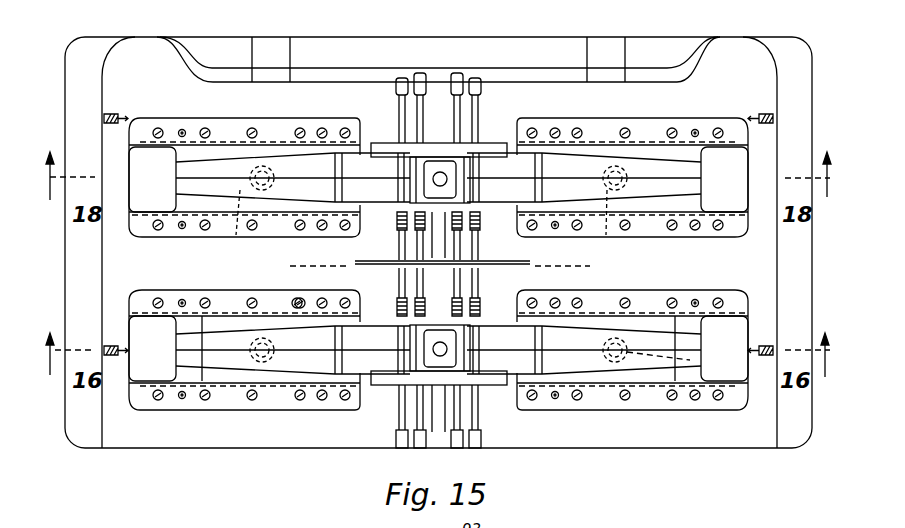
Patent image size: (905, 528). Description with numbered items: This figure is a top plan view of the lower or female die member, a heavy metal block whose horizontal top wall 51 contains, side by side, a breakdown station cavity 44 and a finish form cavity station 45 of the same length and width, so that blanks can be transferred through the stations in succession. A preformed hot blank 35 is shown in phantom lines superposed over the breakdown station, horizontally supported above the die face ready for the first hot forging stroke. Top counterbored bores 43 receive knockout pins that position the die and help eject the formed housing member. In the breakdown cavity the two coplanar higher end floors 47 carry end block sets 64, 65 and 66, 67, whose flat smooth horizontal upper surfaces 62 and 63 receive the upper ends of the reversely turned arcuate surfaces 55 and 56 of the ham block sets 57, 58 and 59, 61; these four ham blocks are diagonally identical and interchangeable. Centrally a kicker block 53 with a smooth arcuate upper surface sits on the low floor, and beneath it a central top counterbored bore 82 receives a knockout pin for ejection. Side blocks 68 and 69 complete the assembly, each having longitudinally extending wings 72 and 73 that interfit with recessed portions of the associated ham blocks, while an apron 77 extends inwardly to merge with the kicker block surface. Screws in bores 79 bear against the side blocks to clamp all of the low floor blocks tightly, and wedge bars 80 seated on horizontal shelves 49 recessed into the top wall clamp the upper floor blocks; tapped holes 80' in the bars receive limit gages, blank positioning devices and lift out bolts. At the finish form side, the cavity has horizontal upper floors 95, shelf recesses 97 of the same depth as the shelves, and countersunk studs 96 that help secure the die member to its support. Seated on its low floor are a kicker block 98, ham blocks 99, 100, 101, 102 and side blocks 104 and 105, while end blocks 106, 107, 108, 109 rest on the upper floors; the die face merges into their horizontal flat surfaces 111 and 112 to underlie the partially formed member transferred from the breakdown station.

The hot blank 35 is at (372, 313).
The top counterbored bores 43 is at (687, 360).
The breakdown station cavity 44 is at (752, 328).
The finish form cavity station 45 is at (752, 175).
The upper end floors 47 is at (137, 335).
The horizontal shelves 49 is at (288, 300).
The horizontal top wall 51 is at (745, 448).
The kicker block 53 is at (467, 336).
The arcuate surface of ham blocks 55 is at (361, 380).
The arcuate surface of ham blocks 56 is at (500, 378).
The ham block 57 is at (365, 300).
The ham block 58 is at (363, 382).
The ham block 59 is at (560, 302).
The ham block 61 is at (513, 384).
The upper surface of end blocks 62 is at (235, 338).
The upper surface of end blocks 63 is at (622, 300).
The end block 64 is at (228, 360).
The end block 65 is at (243, 377).
The end block 66 is at (657, 325).
The end block 67 is at (638, 378).
The side block 68 is at (425, 383).
The side block 69 is at (415, 320).
The wing 72 is at (384, 316).
The wing 73 is at (488, 320).
The apron 77 is at (470, 282).
The bores 79 is at (400, 216).
The wedge bars 80 is at (485, 262).
The tapped holes 80' is at (449, 263).
The central top counterbored bore 82 is at (410, 166).
The horizontal upper floors 95 is at (137, 172).
The countersunk studs 96 is at (424, 264).
The shelf recesses 97 is at (272, 143).
The kicker block 98 is at (464, 168).
The ham block 99 is at (366, 150).
The ham block 100 is at (364, 206).
The ham block 101 is at (512, 150).
The ham block 102 is at (533, 203).
The side block 104 is at (474, 228).
The side block 105 is at (490, 150).
The end block 106 is at (226, 153).
The end block 107 is at (178, 200).
The end block 108 is at (652, 153).
The end block 109 is at (687, 200).
The horizontal flat surface 111 is at (178, 176).
The horizontal flat surface 112 is at (687, 167).